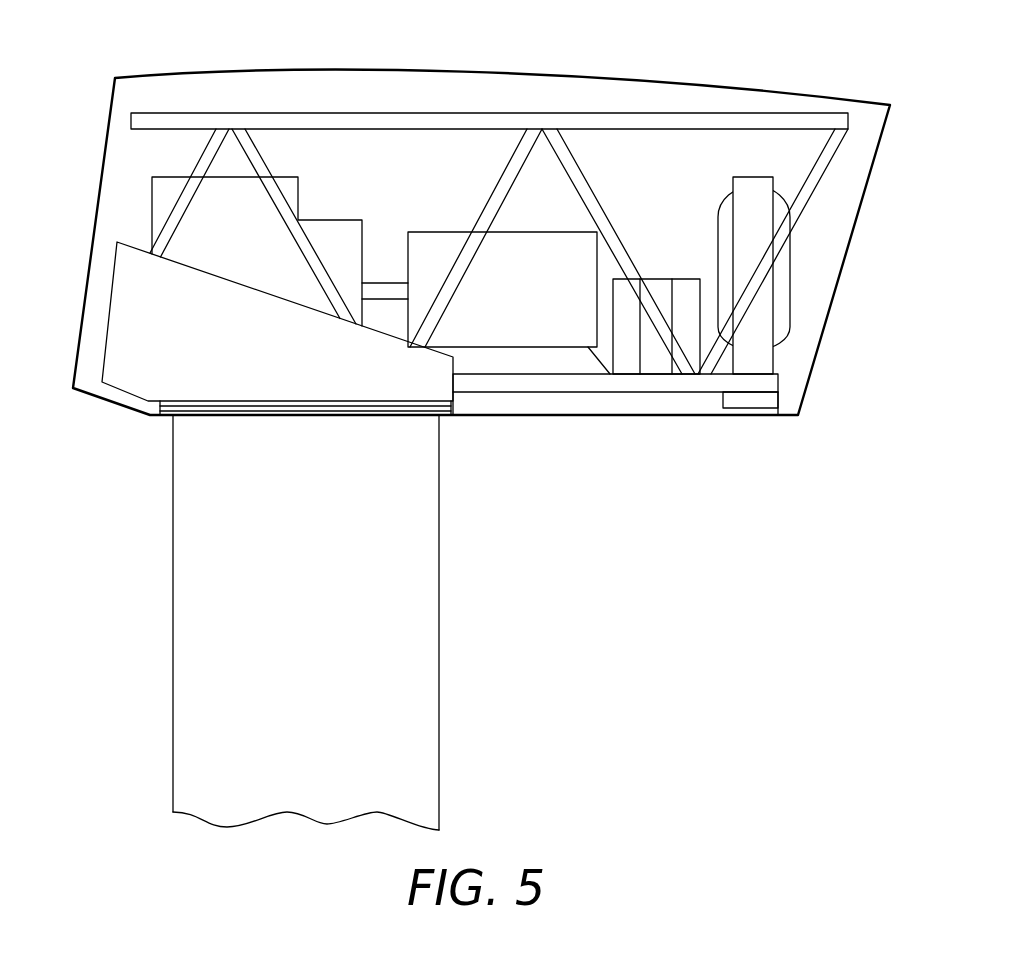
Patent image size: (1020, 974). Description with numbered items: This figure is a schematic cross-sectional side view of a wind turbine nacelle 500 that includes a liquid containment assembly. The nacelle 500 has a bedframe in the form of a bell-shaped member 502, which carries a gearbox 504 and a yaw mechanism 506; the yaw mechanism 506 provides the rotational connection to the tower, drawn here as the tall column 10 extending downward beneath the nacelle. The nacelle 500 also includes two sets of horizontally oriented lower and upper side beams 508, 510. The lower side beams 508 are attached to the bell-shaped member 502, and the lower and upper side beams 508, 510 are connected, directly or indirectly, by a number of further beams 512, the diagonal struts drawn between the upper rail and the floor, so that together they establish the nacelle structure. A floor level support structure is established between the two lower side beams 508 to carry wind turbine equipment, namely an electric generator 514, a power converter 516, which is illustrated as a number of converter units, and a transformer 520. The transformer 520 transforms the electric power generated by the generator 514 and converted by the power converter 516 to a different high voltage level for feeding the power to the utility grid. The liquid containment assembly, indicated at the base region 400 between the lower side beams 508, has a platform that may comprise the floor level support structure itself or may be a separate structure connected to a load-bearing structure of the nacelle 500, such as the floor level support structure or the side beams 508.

The support post 10 is at (441, 622).
The mounting assembly 400 is at (787, 382).
The nacelle 500 is at (588, 62).
The bell-shaped member 502 is at (125, 315).
The gearbox 504 is at (160, 190).
The yaw mechanism 506 is at (312, 411).
The lower side beams 508 is at (688, 383).
The upper side beams 510 is at (743, 122).
The further beams 512 is at (807, 200).
The electric generator 514 is at (523, 363).
The power converter 516 is at (627, 363).
The transformer 520 is at (752, 358).